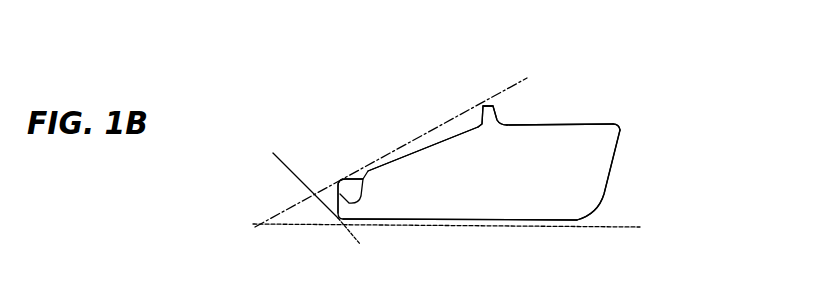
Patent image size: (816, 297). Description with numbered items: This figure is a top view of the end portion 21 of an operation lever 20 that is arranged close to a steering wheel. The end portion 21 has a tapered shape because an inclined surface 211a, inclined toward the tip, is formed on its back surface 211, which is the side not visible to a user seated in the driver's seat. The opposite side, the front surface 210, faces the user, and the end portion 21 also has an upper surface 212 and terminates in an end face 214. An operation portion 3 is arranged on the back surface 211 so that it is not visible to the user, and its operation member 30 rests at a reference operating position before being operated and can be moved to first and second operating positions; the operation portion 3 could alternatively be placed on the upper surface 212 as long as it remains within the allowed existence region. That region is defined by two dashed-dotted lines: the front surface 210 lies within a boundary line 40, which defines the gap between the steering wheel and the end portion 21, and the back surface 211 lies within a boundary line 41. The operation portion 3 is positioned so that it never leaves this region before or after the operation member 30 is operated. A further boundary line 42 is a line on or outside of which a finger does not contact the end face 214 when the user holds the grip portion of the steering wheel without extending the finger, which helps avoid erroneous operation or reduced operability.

The operation lever 20 is at (496, 193).
The end portion 21 is at (622, 125).
The back surface 211 is at (575, 123).
The inclined surface 211a is at (415, 146).
The upper surface 212 is at (592, 173).
The front surface 210 is at (420, 221).
The end face 214 is at (347, 203).
The operation member 30 is at (485, 105).
The operation portion 3 is at (489, 105).
The boundary line 40 is at (460, 228).
The boundary line 41 is at (405, 142).
The boundary line 42 is at (306, 187).